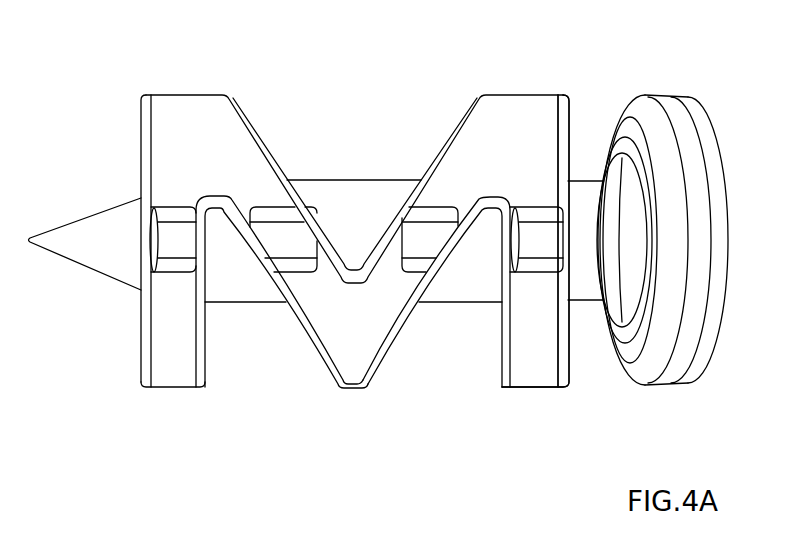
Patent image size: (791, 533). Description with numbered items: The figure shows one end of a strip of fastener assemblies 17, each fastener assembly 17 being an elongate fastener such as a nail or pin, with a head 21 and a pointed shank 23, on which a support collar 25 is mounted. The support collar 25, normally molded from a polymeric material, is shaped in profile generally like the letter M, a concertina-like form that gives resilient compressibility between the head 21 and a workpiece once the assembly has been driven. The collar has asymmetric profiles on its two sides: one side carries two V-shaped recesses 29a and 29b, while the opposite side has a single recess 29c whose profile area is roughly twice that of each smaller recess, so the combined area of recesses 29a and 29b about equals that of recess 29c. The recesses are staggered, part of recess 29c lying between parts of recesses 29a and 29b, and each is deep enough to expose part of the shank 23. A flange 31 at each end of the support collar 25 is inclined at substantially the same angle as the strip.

The fastener assembly 17 is at (100, 384).
The head 21 is at (693, 158).
The pointed shank 23 is at (374, 194).
The support collar 25 is at (533, 113).
The recess 29a is at (257, 370).
The recess 29b is at (459, 370).
The single recess 29c is at (318, 137).
The flange 31 is at (183, 150).